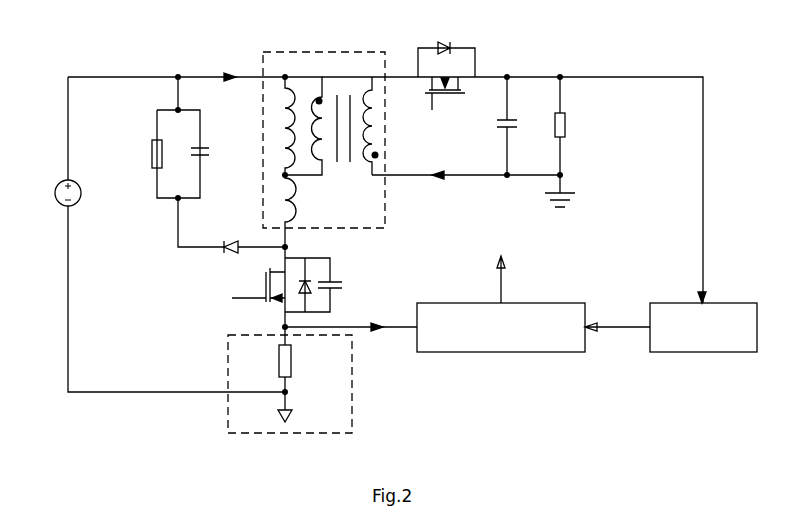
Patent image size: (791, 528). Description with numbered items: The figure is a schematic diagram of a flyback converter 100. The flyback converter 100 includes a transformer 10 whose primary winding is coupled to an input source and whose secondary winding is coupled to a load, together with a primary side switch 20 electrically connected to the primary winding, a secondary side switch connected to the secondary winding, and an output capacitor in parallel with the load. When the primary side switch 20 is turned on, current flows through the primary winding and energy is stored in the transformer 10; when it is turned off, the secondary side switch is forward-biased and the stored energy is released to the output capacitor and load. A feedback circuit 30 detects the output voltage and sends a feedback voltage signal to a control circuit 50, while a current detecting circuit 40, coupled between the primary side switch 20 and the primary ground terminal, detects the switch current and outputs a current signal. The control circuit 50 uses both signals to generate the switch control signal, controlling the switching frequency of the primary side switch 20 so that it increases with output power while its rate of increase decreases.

The flyback converter 100 is at (369, 207).
The transformer 10 is at (385, 190).
The primary side switch 20 is at (232, 292).
The feedback circuit 30 is at (712, 300).
The current detecting circuit 40 is at (352, 397).
The control circuit 50 is at (525, 303).